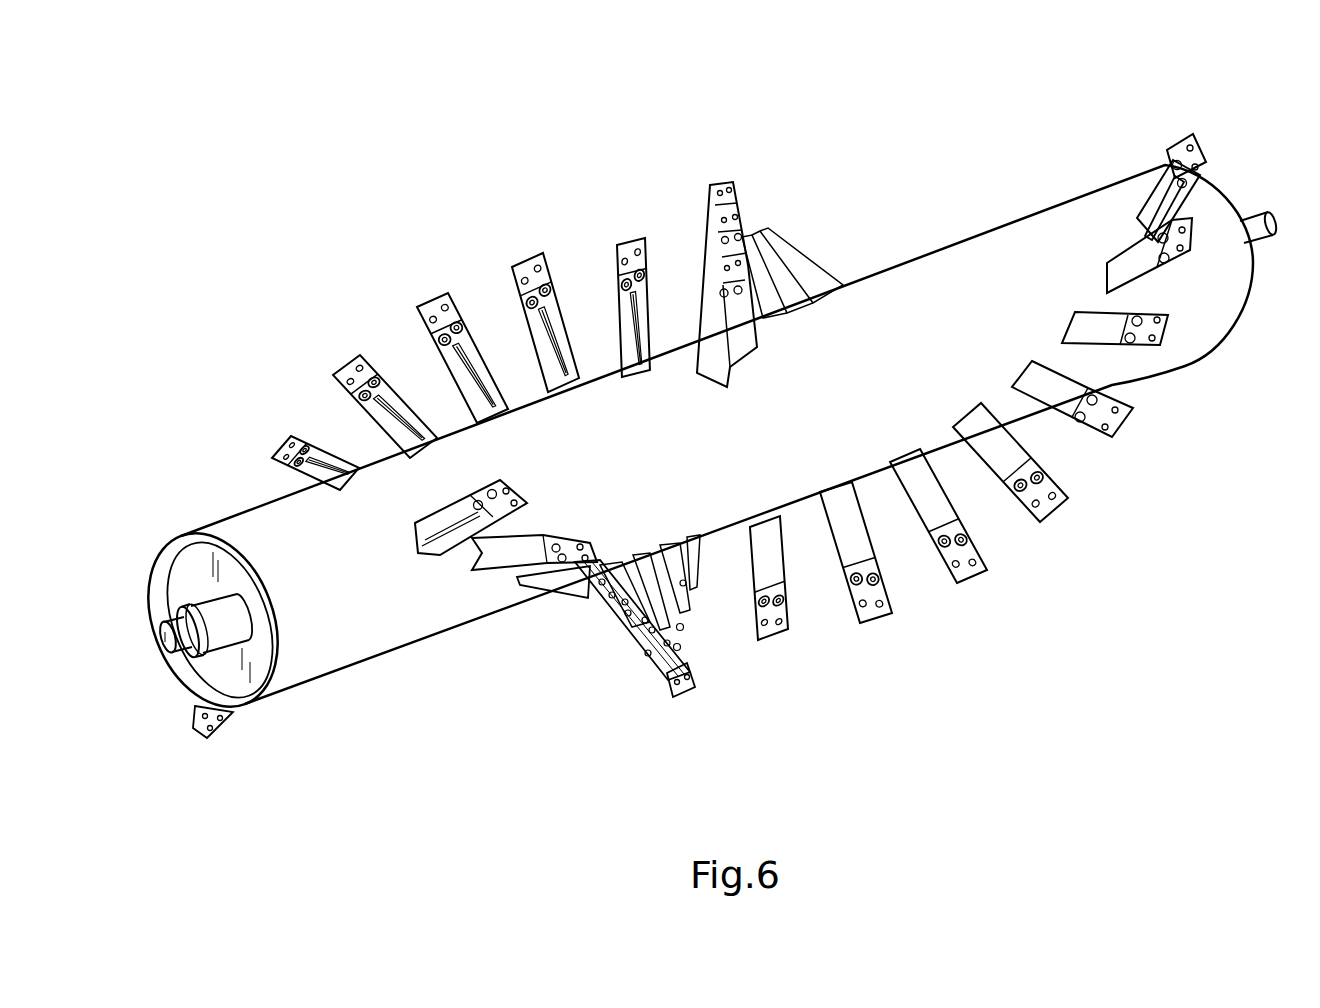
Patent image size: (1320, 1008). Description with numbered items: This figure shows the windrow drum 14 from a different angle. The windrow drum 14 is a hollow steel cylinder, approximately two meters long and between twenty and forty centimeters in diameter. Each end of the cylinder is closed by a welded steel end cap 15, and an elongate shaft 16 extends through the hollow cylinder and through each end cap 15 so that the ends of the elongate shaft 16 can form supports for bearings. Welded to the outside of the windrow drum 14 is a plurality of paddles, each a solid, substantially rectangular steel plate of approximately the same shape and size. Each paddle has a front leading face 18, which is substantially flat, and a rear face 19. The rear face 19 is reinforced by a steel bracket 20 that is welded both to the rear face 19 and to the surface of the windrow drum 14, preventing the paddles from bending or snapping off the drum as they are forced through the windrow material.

The windrow drum 14 is at (955, 240).
The end cap 15 is at (198, 567).
The elongate shaft 16 is at (220, 648).
The front leading face 18 is at (1003, 458).
The rear face 19 is at (450, 363).
The steel bracket 20 is at (633, 332).